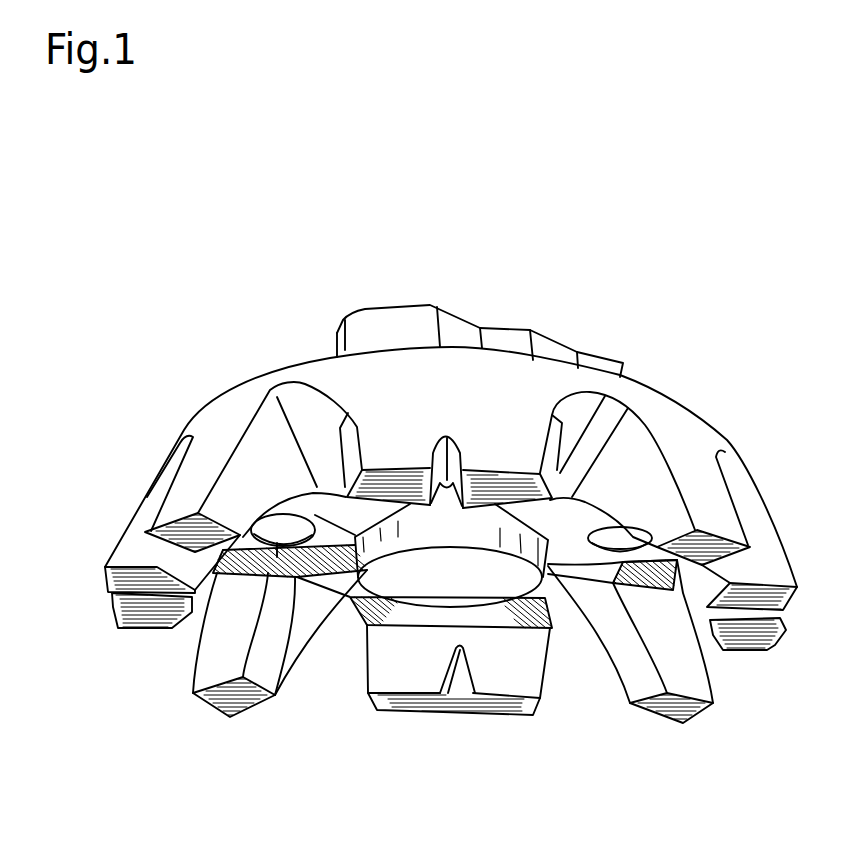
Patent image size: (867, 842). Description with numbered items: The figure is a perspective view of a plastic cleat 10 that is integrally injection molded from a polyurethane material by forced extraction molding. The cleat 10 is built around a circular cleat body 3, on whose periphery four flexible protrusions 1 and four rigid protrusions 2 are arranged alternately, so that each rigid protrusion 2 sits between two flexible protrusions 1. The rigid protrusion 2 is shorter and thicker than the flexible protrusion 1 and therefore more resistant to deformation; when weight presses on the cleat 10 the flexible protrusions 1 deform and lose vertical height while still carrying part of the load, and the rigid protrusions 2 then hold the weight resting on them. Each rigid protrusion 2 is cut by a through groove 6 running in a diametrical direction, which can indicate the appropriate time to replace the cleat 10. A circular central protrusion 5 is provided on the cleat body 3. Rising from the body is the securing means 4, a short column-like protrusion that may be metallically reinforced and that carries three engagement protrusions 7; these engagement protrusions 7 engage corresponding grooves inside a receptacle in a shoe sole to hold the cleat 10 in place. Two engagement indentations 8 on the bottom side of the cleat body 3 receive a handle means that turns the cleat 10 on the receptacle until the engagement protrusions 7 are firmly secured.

The flexible protrusion 1 is at (703, 495).
The rigid protrusion 2 is at (497, 465).
The cleat body 3 is at (350, 380).
The securing means 4 is at (510, 340).
The central protrusion 5 is at (463, 580).
The through groove 6 is at (455, 700).
The engagement protrusion 7 is at (390, 332).
The engagement indentation 8 is at (273, 543).
The cleat 10 is at (692, 366).